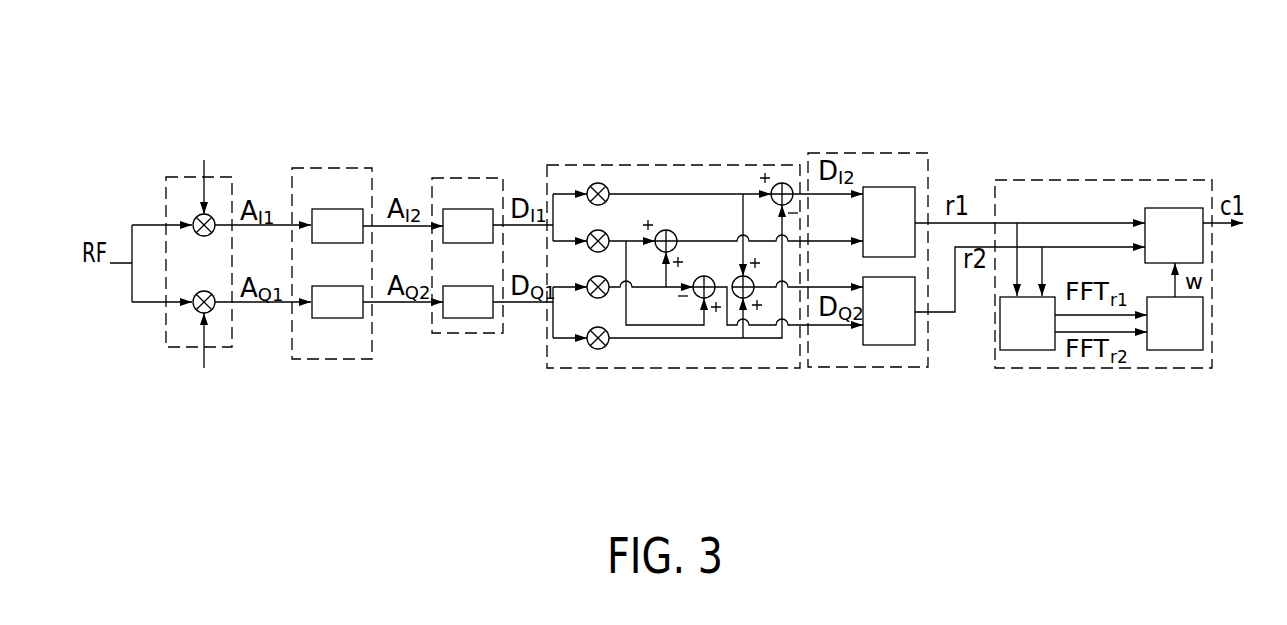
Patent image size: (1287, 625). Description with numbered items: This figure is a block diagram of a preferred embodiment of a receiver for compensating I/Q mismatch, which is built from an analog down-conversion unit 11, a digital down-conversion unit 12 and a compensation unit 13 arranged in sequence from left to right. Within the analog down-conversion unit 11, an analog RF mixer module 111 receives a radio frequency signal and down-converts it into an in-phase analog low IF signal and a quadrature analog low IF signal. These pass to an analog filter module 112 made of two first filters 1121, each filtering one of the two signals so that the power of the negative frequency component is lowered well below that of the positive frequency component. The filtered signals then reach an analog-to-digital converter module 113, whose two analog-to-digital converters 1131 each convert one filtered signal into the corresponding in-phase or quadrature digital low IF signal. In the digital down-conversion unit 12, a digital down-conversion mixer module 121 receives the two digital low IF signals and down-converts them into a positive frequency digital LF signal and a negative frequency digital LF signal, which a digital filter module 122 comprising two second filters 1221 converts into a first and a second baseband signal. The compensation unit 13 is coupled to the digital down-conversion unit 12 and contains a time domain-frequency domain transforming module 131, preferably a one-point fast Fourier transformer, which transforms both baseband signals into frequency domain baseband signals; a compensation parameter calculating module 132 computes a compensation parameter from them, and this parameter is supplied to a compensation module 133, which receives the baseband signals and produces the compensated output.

The analog down-conversion unit 11 is at (498, 102).
The analog RF mixer module 111 is at (186, 176).
The analog filter module 112 is at (330, 167).
The first filter 1121 is at (323, 209).
The analog-to-digital converter module 113 is at (455, 176).
The analog-to-digital converter 1131 is at (468, 209).
The digital down-conversion unit 12 is at (885, 430).
The digital down-conversion mixer module 121 is at (666, 372).
The digital filter module 122 is at (848, 370).
The second filter 1221 is at (878, 187).
The compensation unit 13 is at (1085, 180).
The time domain-frequency domain transforming module 131 is at (1025, 350).
The compensation parameter calculating module 132 is at (1178, 350).
The compensation module 133 is at (1203, 250).